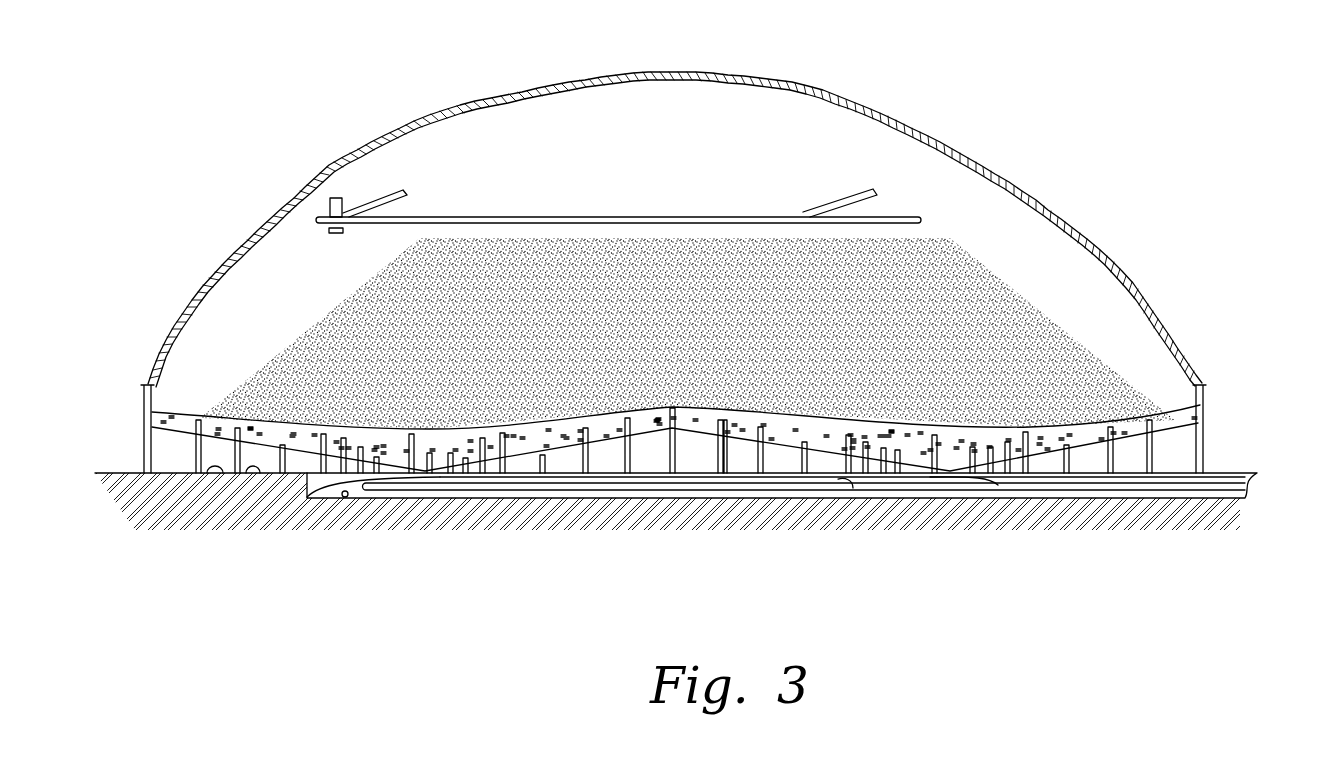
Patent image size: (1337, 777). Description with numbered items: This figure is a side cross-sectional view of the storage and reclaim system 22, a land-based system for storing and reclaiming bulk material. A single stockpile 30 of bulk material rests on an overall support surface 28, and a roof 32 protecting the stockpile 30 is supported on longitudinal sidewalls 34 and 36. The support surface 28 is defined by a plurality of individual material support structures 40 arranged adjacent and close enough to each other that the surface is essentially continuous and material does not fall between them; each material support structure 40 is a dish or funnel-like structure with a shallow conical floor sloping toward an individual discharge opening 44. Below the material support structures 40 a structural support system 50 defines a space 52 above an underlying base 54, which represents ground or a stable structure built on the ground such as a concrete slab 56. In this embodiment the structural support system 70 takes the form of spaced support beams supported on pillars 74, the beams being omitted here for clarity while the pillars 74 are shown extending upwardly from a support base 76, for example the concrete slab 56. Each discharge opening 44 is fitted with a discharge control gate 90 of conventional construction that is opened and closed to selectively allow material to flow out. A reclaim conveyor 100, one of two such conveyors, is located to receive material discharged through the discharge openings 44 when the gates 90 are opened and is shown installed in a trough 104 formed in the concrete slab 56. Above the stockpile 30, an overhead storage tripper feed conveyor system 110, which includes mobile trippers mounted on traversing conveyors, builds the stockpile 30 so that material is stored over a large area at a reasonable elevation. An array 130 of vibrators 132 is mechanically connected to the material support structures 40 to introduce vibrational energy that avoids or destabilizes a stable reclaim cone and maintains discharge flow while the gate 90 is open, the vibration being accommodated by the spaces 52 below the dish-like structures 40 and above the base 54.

The storage and reclaim system 22 is at (1042, 63).
The overall support surface 28 is at (268, 383).
The stockpile 30 is at (943, 292).
The roof 32 is at (842, 100).
The longitudinal sidewall 34 is at (145, 408).
The longitudinal sidewall 36 is at (1202, 407).
The individual material support structure 40 is at (233, 420).
The discharge opening 44 is at (310, 499).
The structural support system 50 is at (1270, 430).
The space 52 is at (150, 452).
The underlying base 54 is at (214, 476).
The concrete slab 56 is at (1133, 512).
The structural support system 70 is at (1285, 480).
The pillar 74 is at (578, 478).
The support base 76 is at (252, 478).
The discharge control gate 90 is at (400, 492).
The reclaim conveyor 100 is at (853, 488).
The trough 104 is at (345, 497).
The overhead storage tripper feed conveyor system 110 is at (712, 150).
The array of vibrators 130 is at (927, 572).
The vibrator 132 is at (955, 437).